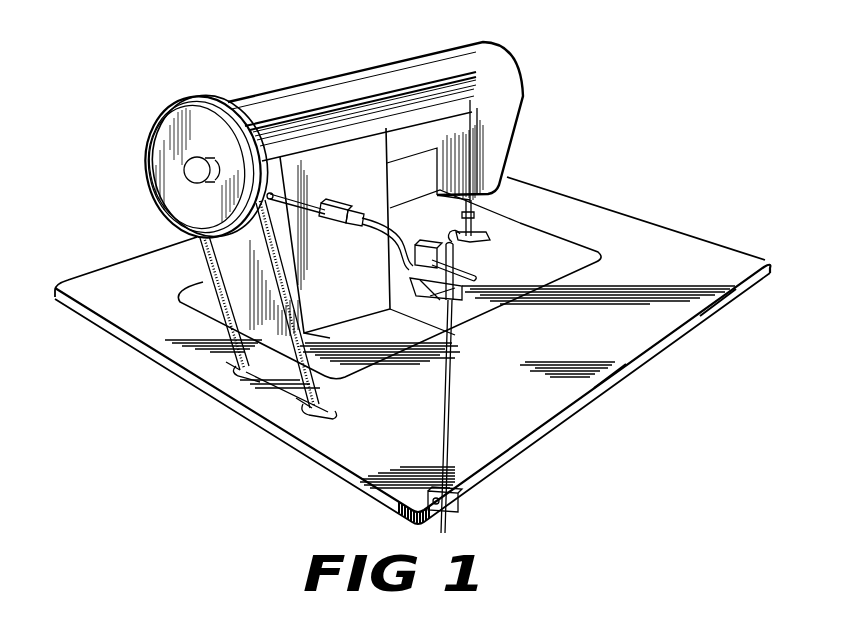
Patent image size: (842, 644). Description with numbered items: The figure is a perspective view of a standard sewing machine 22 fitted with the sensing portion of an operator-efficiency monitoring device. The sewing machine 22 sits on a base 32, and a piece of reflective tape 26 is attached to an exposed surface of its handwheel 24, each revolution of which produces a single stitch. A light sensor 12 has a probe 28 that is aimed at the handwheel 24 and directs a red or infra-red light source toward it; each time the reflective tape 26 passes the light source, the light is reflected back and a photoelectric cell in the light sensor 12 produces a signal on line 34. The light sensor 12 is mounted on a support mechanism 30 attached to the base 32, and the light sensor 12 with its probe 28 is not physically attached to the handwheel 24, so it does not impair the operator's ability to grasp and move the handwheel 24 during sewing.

The light sensor 12 is at (337, 206).
The sewing machine 22 is at (431, 58).
The handwheel 24 is at (196, 102).
The reflective tape 26 is at (246, 154).
The probe 28 is at (297, 209).
The support mechanism 30 is at (449, 405).
The base 32 is at (510, 436).
The line 34 is at (376, 248).